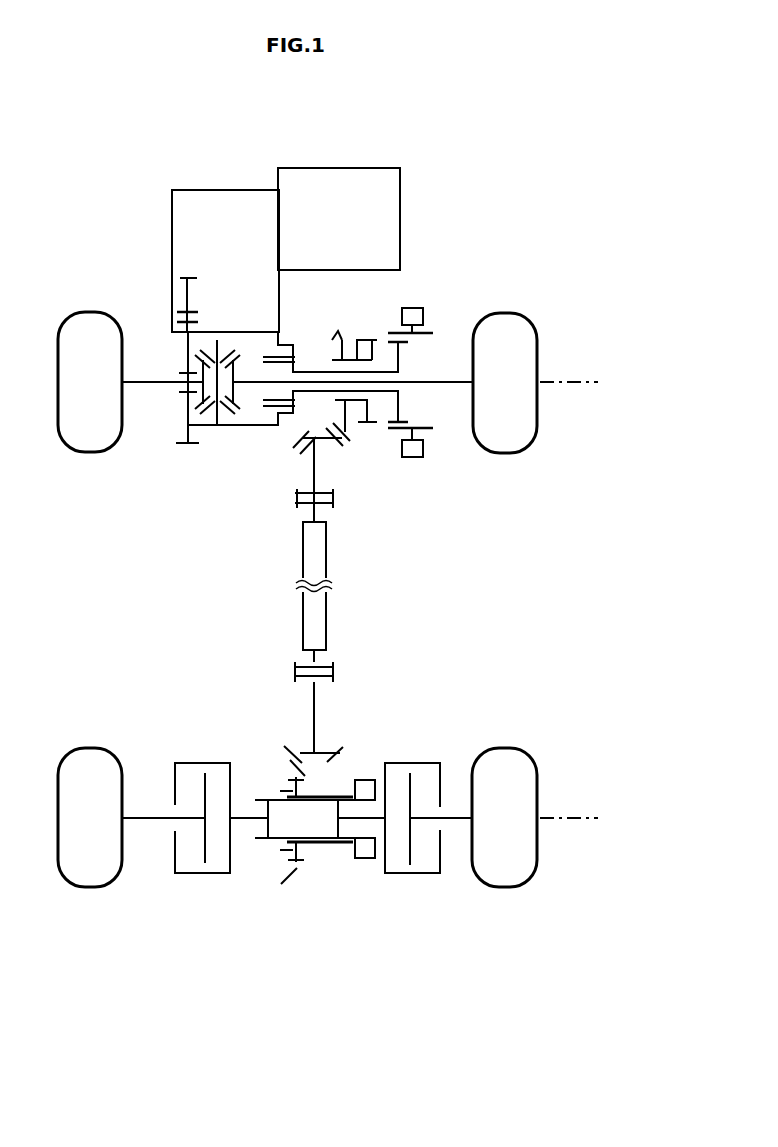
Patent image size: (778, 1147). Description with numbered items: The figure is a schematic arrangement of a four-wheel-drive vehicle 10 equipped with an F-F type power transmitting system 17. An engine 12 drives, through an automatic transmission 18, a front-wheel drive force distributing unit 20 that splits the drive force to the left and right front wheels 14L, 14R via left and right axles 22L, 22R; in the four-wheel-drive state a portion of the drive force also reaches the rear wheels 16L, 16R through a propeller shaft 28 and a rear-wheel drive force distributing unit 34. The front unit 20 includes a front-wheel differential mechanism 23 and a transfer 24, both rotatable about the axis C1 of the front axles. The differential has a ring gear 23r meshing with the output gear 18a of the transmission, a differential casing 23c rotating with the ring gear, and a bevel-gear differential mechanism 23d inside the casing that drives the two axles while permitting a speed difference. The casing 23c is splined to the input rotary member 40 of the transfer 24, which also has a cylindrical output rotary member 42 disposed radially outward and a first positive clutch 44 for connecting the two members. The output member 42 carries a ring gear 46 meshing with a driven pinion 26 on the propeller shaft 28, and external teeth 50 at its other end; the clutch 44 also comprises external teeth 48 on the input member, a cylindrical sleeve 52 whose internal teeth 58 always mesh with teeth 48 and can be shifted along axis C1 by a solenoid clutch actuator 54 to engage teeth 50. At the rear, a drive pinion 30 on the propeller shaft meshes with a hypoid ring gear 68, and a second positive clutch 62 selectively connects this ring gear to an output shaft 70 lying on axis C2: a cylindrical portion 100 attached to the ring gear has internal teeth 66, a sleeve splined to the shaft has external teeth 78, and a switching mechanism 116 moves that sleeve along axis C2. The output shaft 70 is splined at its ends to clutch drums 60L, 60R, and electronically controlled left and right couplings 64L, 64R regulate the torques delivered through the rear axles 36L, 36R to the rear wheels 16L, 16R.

The 4-wheel-drive vehicle 10 is at (443, 126).
The engine 12 is at (335, 185).
The left front wheel 14L is at (88, 328).
The right front wheel 14R is at (505, 328).
The left rear wheel 16L is at (93, 878).
The right rear wheel 16R is at (505, 875).
The 4-wheel-drive power transmitting system 17 is at (522, 576).
The automatic transmission 18 is at (225, 205).
The output gear 18a is at (182, 308).
The front-wheel drive force distributing unit 20 is at (170, 527).
The left axle 22L is at (148, 384).
The right axle 22R is at (447, 386).
The front-wheel differential mechanism 23 is at (287, 445).
The differential casing 23c is at (235, 427).
The differential mechanism 23d is at (207, 420).
The ring gear 23r is at (188, 447).
The transfer 24 is at (364, 404).
The driven pinion 26 is at (310, 467).
The propeller shaft 28 is at (323, 608).
The drive pinion 30 is at (318, 693).
The rear-wheel drive force distributing unit 34 is at (176, 686).
The left axle 36L is at (150, 815).
The right axle 36R is at (452, 815).
The input rotary member 40 is at (316, 370).
The output rotary member 42 is at (347, 342).
The first positive clutch 44 is at (401, 466).
The ring gear 46 is at (330, 430).
The external teeth 48 is at (410, 344).
The external teeth 50 is at (372, 342).
The cylindrical sleeve 52 is at (423, 333).
The clutch actuator 54 is at (412, 306).
The internal teeth 58 is at (413, 343).
The clutch drum 60L is at (245, 810).
The clutch drum 60R is at (363, 815).
The second positive clutch 62 is at (263, 731).
The left coupling 64L is at (190, 880).
The right coupling 64R is at (413, 880).
The internal teeth 66 is at (305, 850).
The ring gear 68 is at (284, 866).
The output shaft 70 is at (333, 846).
The external teeth 78 is at (280, 855).
The cylindrical portion 100 is at (287, 781).
The switching mechanism 116 is at (345, 860).
The axis C1 is at (548, 386).
The axis C2 is at (552, 822).